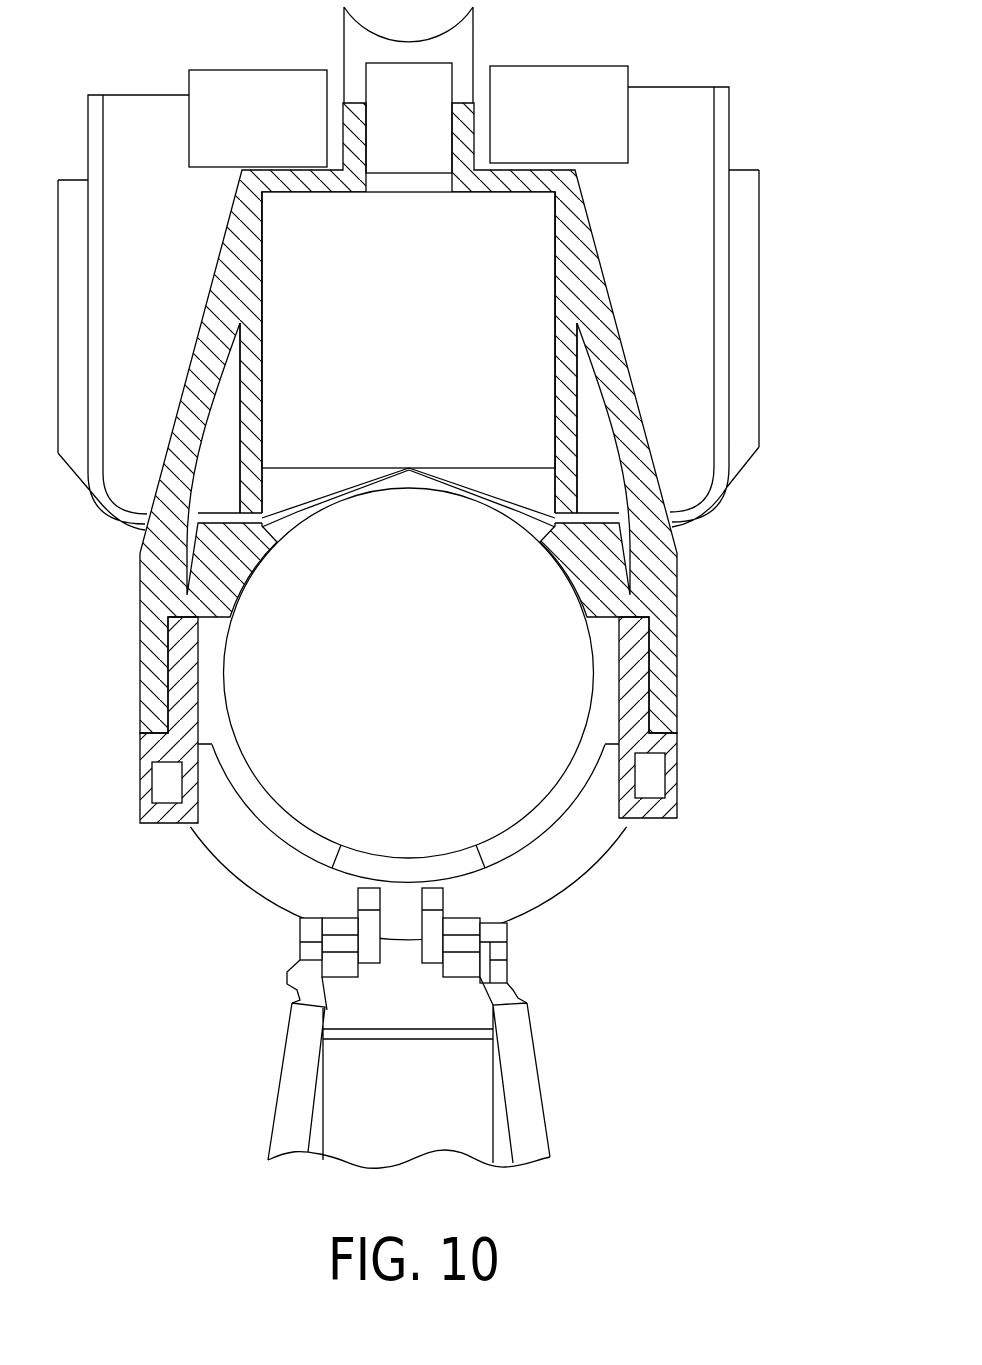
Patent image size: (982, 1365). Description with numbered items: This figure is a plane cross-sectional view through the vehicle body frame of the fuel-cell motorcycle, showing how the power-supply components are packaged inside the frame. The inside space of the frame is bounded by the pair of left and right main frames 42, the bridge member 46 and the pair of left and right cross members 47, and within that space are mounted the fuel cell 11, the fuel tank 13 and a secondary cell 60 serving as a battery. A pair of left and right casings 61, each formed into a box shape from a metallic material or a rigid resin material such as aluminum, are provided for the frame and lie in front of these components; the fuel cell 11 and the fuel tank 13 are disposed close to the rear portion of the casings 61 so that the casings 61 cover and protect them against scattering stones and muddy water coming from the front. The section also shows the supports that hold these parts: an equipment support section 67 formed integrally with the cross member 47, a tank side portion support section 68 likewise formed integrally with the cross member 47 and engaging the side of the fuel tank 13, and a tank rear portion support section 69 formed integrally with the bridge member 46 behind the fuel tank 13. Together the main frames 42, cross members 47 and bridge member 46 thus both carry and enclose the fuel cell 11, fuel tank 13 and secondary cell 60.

The fuel cell 11 is at (572, 267).
The fuel tank 13 is at (549, 818).
The main frame 42 is at (140, 783).
The bridge member 46 is at (547, 892).
The cross member 47 is at (140, 572).
The secondary cell 60 is at (138, 93).
The casing 61 is at (233, 68).
The equipment support section 67 is at (262, 337).
The tank side portion support section 68 is at (213, 617).
The tank rear portion support section 69 is at (337, 858).